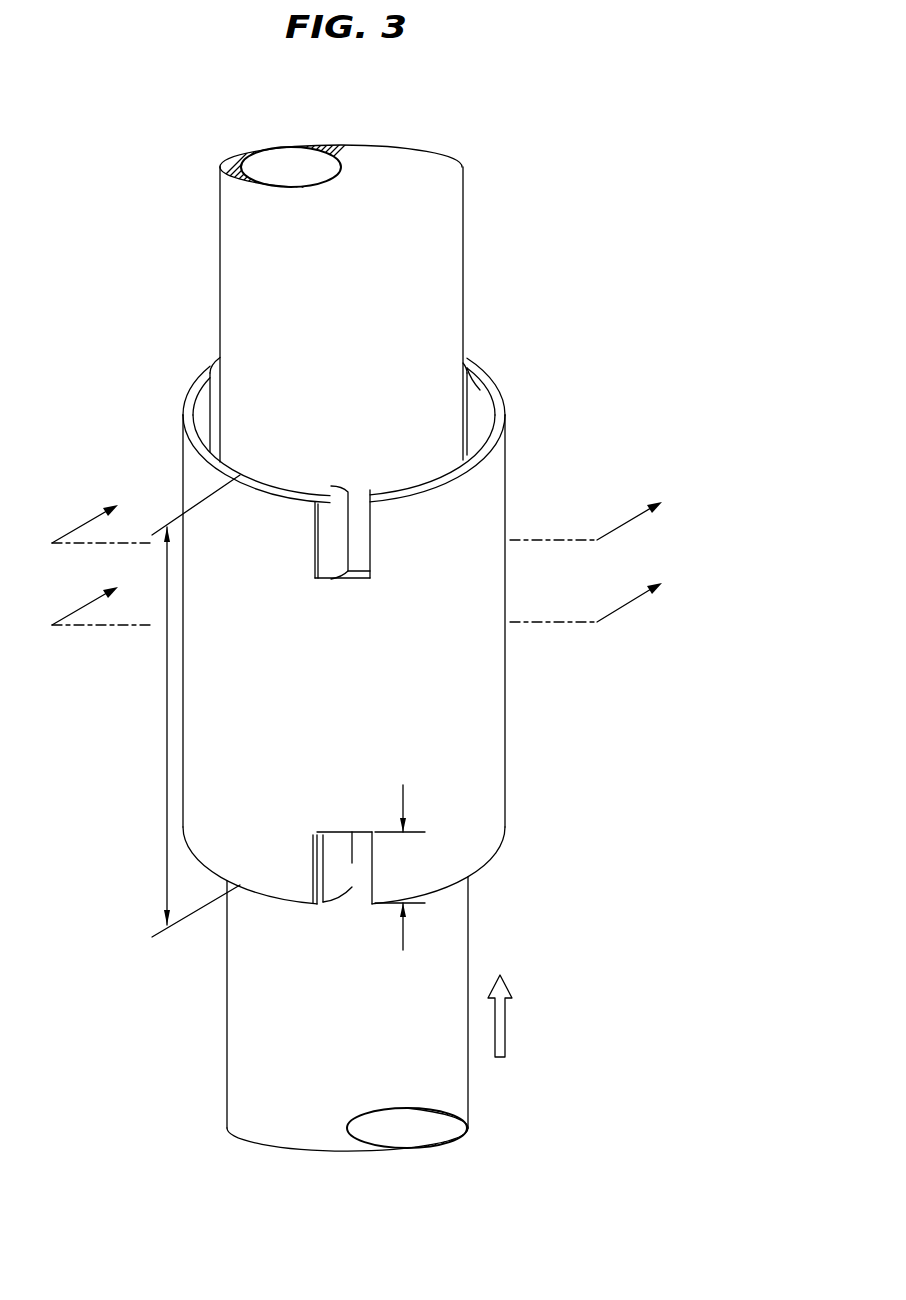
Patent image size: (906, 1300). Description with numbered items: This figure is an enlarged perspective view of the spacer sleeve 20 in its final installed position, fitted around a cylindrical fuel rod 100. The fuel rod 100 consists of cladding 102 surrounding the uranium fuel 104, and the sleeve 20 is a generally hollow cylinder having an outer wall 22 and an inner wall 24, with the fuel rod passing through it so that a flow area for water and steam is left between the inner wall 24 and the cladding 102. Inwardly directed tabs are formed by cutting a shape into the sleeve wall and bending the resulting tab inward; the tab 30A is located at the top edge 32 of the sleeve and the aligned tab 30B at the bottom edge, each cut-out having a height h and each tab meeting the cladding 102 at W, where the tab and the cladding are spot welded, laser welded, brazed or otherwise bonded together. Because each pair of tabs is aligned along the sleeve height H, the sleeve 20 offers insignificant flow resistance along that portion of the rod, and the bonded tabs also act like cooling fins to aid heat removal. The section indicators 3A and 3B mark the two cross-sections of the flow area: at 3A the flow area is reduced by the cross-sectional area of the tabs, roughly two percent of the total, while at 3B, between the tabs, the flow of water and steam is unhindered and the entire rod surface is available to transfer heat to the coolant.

The fuel rod 100 is at (496, 116).
The cladding 102 is at (235, 260).
The uranium fuel 104 is at (287, 163).
The spacer sleeve 20 is at (590, 765).
The outer wall 22 is at (478, 708).
The inner wall 24 is at (475, 385).
The top edge 32 is at (502, 393).
The inwardly directed tab 30A is at (330, 540).
The inwardly directed tab 30B is at (325, 863).
The section line 3A is at (357, 513).
The section line 3B is at (357, 595).
The height of the spacer H is at (196, 706).
The tab height h is at (400, 867).
The weld location W is at (348, 533).